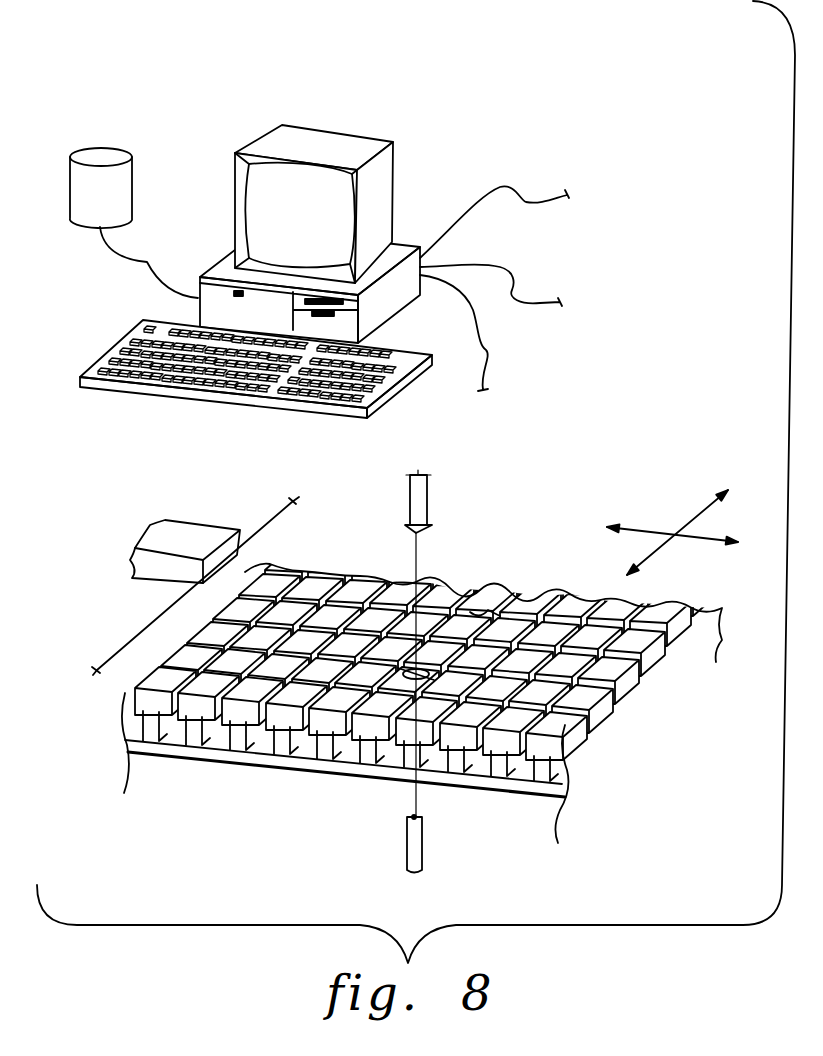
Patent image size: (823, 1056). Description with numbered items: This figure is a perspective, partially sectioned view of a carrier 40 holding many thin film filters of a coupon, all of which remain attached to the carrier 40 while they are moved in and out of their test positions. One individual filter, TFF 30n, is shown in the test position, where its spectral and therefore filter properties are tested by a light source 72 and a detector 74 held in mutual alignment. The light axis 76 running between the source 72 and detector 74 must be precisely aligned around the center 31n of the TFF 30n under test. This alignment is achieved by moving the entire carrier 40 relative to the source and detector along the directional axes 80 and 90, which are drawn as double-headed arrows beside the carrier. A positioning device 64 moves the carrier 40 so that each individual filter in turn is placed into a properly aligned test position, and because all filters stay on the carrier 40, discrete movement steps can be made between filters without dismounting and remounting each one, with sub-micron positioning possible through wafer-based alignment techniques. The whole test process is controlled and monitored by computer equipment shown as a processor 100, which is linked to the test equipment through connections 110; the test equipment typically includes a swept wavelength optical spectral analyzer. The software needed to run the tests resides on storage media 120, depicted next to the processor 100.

The processor 100 is at (352, 112).
The connections 110 is at (521, 176).
The storage media 120 is at (122, 146).
The carrier 40 is at (407, 673).
The positioning device 64 is at (203, 551).
The TFF 30n is at (338, 768).
The center of the TFF 31n is at (455, 640).
The light source 72 is at (422, 843).
The detector 74 is at (427, 489).
The light axis 76 is at (416, 533).
The directional axis 80 is at (645, 527).
The directional axis 90 is at (695, 512).